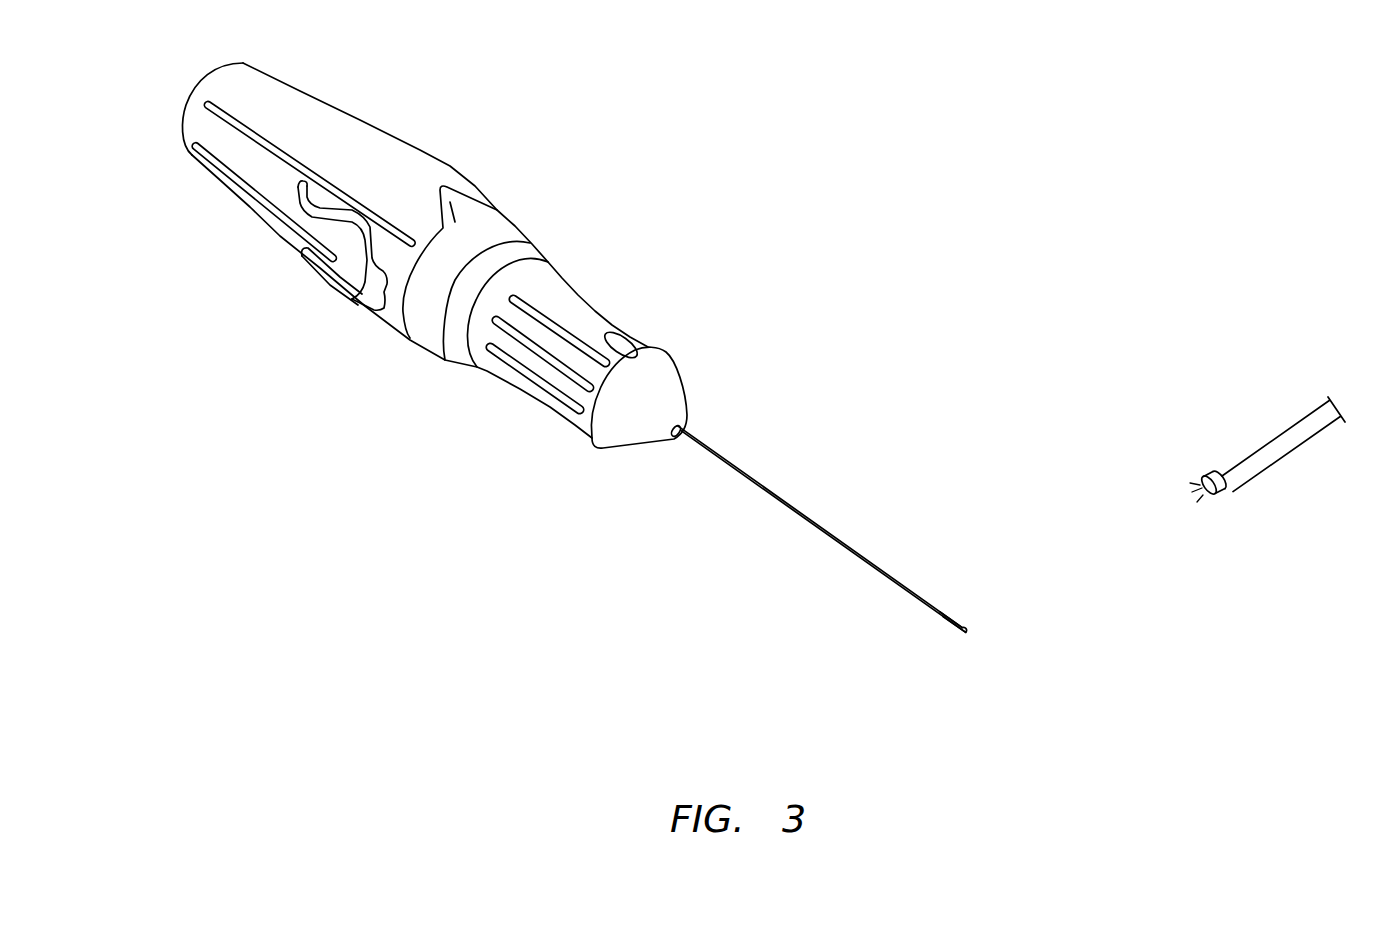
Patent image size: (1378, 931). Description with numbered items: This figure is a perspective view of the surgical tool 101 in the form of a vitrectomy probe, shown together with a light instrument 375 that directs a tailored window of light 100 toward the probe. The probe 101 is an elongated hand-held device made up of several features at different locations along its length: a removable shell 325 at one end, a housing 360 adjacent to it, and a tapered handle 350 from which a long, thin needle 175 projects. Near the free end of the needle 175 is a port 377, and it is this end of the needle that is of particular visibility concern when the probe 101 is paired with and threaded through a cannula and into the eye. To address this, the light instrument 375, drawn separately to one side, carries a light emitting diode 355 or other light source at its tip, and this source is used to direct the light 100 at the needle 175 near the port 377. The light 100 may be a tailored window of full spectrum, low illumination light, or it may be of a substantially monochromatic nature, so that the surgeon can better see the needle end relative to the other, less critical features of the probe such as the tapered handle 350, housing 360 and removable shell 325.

The surgical tool 101 is at (607, 165).
The removable shell 325 is at (258, 207).
The housing 360 is at (438, 371).
The tapered handle 350 is at (612, 437).
The needle 175 is at (818, 522).
The port 377 is at (953, 627).
The tailored window of light 100 is at (1190, 462).
The light emitting diode 355 is at (1224, 492).
The light instrument 375 is at (1313, 449).